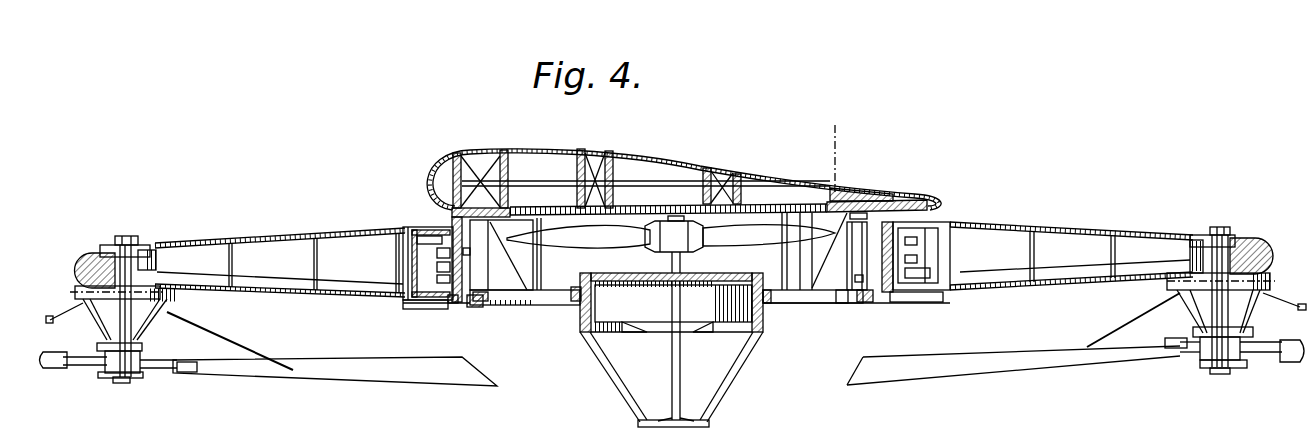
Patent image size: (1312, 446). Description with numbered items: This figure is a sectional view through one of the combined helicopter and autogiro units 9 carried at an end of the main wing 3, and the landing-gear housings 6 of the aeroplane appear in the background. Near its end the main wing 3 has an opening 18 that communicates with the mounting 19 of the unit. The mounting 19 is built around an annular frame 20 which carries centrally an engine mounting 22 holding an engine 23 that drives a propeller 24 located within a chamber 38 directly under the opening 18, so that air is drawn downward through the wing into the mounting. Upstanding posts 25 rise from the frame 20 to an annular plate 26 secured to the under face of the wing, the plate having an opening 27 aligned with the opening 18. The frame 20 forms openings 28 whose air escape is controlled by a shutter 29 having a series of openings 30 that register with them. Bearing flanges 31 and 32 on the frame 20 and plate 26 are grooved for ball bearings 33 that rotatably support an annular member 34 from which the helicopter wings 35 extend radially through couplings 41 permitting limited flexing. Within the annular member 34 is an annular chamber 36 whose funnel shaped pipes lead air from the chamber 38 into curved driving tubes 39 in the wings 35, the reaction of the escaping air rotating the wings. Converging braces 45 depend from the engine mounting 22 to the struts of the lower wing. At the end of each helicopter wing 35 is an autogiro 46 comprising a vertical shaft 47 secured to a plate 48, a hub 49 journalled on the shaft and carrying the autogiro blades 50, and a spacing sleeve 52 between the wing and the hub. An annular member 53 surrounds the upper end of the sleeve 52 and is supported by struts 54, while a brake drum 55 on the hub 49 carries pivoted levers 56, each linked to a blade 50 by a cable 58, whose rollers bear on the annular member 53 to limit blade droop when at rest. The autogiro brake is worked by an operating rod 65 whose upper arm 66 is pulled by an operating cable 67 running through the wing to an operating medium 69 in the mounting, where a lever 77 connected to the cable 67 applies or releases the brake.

The main wing 3 is at (465, 152).
The housings 6 is at (826, 336).
The combined helicopter and autogiro 9 is at (322, 300).
The openings 18 is at (765, 173).
The mounting 19 is at (870, 212).
The frame 20 is at (783, 287).
The engine mounting 22 is at (578, 327).
The engine 23 is at (657, 308).
The propeller 24 is at (622, 238).
The upstanding posts 25 is at (483, 270).
The annular plate 26 is at (470, 213).
The opening 27 is at (645, 207).
The openings 28 is at (783, 304).
The shutter 29 is at (487, 306).
The openings 30 is at (536, 308).
The bearing flange 31 is at (458, 302).
The bearing flange 32 is at (453, 217).
The ball bearings 33 is at (480, 160).
The annular member 34 is at (400, 247).
The helicopter wings 35 is at (216, 243).
The annular chamber 36 is at (920, 243).
The chamber 38 is at (770, 253).
The driving tubes 39 is at (183, 260).
The couplings 41 is at (907, 227).
The converging braces 45 is at (720, 390).
The autogiro 46 is at (195, 372).
The vertical shaft 47 is at (128, 235).
The plate 48 is at (1257, 243).
The hub 49 is at (125, 372).
The autogiro blades 50 is at (370, 379).
The spacing sleeve 52 is at (140, 322).
The annular member 53 is at (80, 289).
The struts 54 is at (1175, 293).
The brake drum 55 is at (93, 345).
The levers 56 is at (1260, 318).
The cable 58 is at (243, 347).
The operating rod 65 is at (143, 307).
The arm 66 is at (1197, 240).
The operating cable 67 is at (364, 282).
The operating medium 69 is at (842, 303).
The lever 77 is at (917, 270).